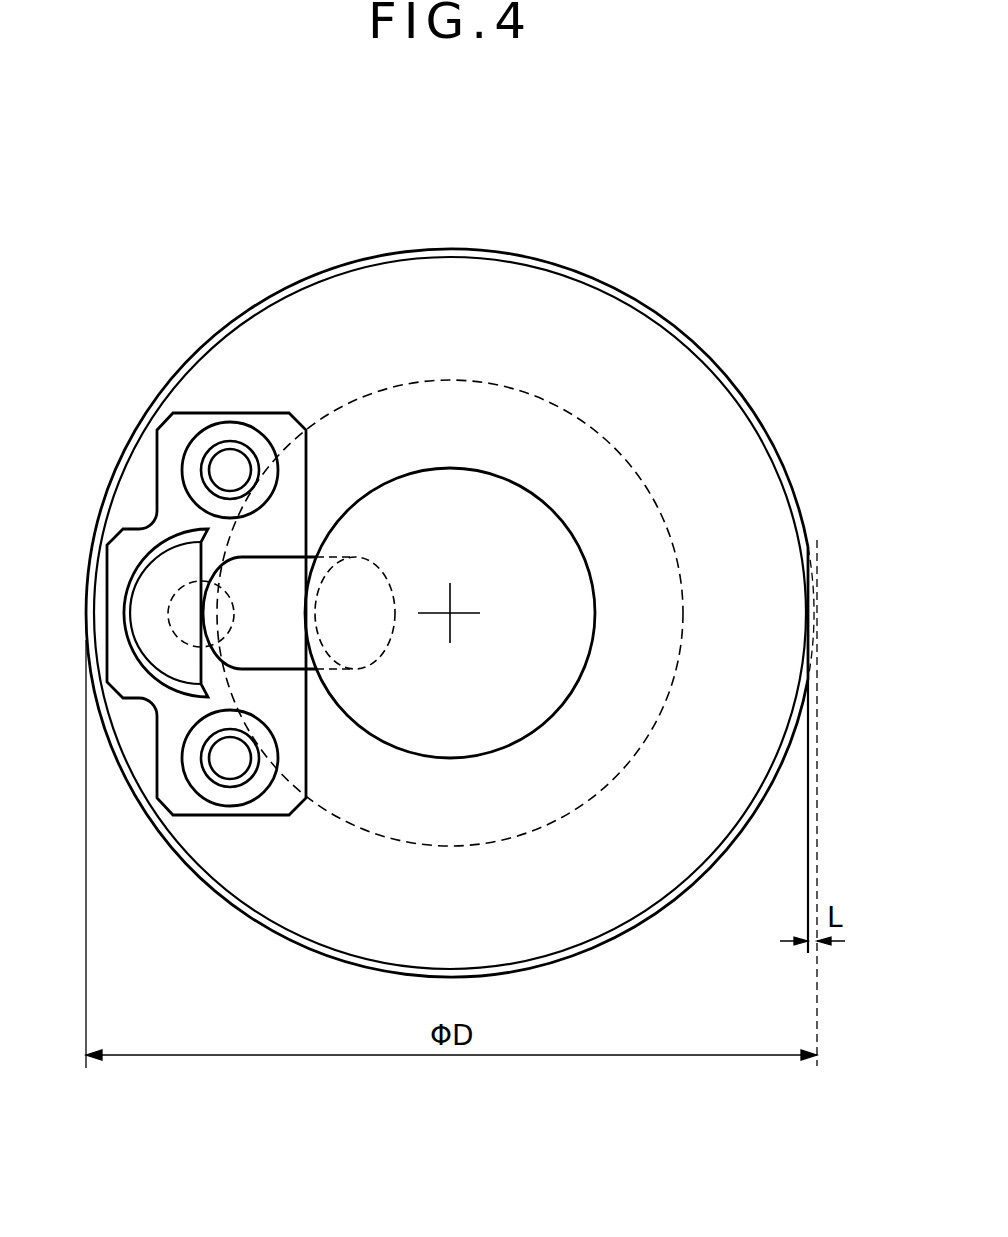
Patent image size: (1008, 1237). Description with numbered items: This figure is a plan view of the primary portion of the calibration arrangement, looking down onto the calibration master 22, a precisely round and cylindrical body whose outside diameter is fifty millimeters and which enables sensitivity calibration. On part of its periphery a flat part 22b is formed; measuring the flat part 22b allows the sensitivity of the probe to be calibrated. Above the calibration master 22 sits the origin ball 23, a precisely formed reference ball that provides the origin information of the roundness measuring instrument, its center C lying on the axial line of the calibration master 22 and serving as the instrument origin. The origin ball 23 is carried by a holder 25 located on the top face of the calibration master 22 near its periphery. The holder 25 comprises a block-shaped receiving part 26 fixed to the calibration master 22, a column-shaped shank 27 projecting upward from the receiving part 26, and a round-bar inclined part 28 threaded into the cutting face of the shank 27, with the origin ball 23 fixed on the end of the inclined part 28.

The calibration master 22 is at (470, 252).
The flat part 22b is at (808, 592).
The origin ball 23 is at (538, 523).
The holder 25 is at (245, 413).
The receiving part 26 is at (185, 425).
The shank 27 is at (163, 567).
The inclined part 28 is at (313, 557).
The center of the origin ball C is at (452, 613).